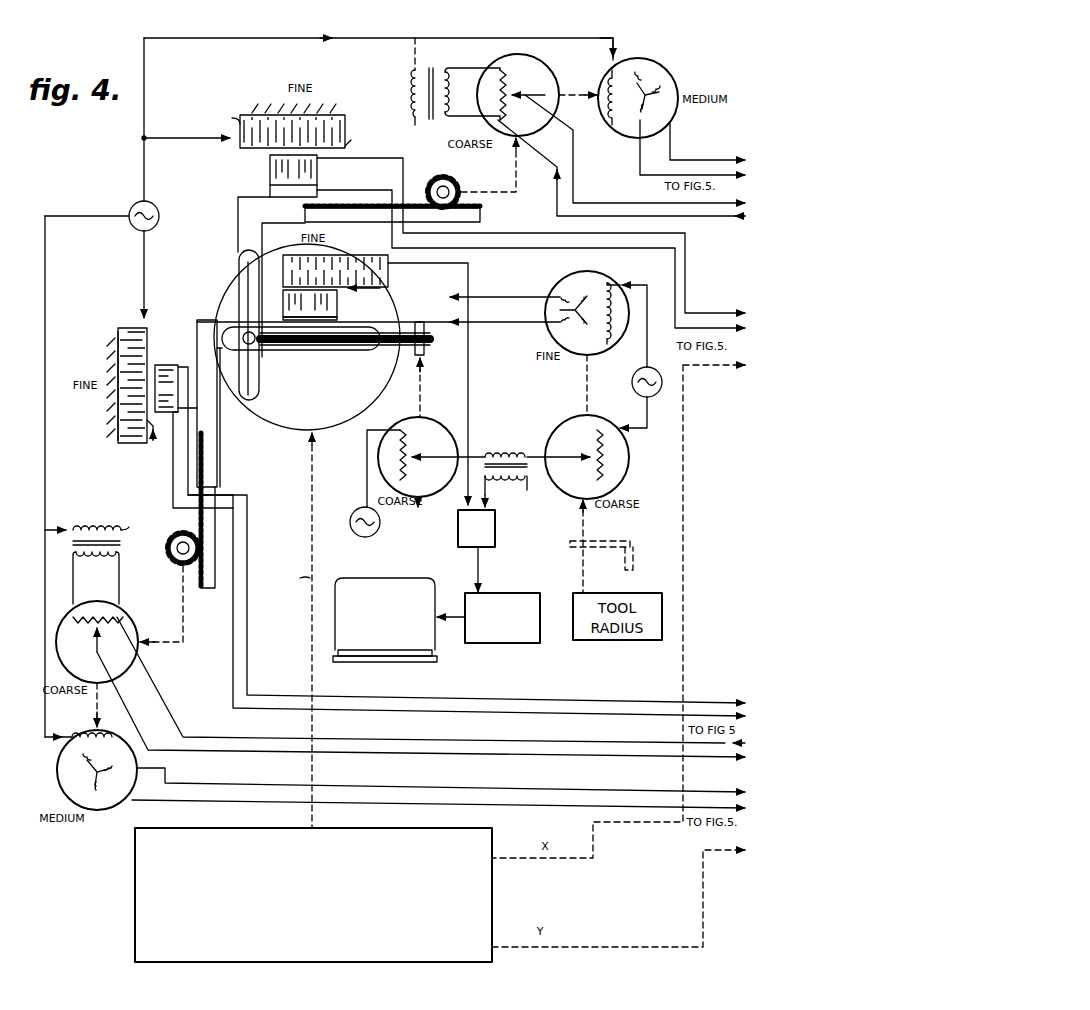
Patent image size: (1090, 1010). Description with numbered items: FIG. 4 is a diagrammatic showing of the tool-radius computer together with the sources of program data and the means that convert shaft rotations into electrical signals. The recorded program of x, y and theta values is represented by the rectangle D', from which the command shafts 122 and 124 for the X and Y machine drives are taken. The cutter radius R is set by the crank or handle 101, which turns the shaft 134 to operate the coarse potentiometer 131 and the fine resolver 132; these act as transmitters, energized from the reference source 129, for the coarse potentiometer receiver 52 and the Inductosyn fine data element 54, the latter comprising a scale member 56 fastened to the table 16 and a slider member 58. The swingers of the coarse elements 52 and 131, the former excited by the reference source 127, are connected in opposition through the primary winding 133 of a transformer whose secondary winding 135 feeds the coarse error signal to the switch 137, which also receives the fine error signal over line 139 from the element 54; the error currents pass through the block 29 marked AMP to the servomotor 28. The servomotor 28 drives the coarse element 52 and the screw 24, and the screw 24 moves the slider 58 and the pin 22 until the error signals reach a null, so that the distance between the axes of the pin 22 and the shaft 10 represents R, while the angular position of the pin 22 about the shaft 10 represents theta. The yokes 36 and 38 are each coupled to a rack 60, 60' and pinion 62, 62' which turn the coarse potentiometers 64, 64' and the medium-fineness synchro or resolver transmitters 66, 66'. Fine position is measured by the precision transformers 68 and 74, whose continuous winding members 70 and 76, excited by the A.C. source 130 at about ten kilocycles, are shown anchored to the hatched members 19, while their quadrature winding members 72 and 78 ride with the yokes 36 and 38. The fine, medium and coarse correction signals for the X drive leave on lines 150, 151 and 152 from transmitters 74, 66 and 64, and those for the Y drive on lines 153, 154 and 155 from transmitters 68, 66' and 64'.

The shaft 10 is at (312, 528).
The table 16 is at (382, 393).
The fine resistance card 19 is at (338, 110).
The pin 22 is at (259, 362).
The screw 24 is at (373, 352).
The servomotor 28 is at (362, 578).
The amplifier 29 is at (515, 591).
The yoke 36 is at (205, 320).
The yoke 38 is at (238, 197).
The coarse potentiometer receiver 52 is at (440, 418).
The Inductosyn fine data element 54 is at (390, 288).
The scale member 56 is at (353, 258).
The slider member 58 is at (337, 305).
The rack 60 is at (407, 215).
The rack 60' is at (209, 523).
The pinion 62 is at (455, 182).
The pinion 62' is at (171, 543).
The coarse potentiometer 64 is at (611, 135).
The coarse potentiometer 64' is at (400, 674).
The medium position data transmitter 66 is at (671, 113).
The medium position data transmitter 66' is at (385, 770).
The precision measurement transformer 68 is at (153, 440).
The continuous winding member 70 is at (122, 326).
The quadrature winding member 72 is at (168, 365).
The precision measurement transformer 74 is at (352, 140).
The continuous winding member 76 is at (234, 121).
The quadrature winding member 78 is at (317, 172).
The crank or handle 101 is at (627, 537).
The shaft 122 is at (707, 368).
The shaft 124 is at (572, 950).
The reference voltage source 127 is at (376, 532).
The reference voltage source 129 is at (632, 392).
The A.C. source 130 is at (156, 226).
The coarse potentiometer 131 is at (620, 468).
The fine resolver 132 is at (605, 275).
The primary winding 133 is at (512, 448).
The shaft 134 is at (586, 572).
The secondary winding 135 is at (522, 490).
The switch 137 is at (495, 540).
The line 139 is at (468, 400).
The line 150 is at (685, 270).
The line 151 is at (705, 158).
The line 152 is at (705, 220).
The line 153 is at (640, 700).
The line 154 is at (628, 796).
The line 155 is at (626, 748).
The program rectangle D' is at (296, 895).